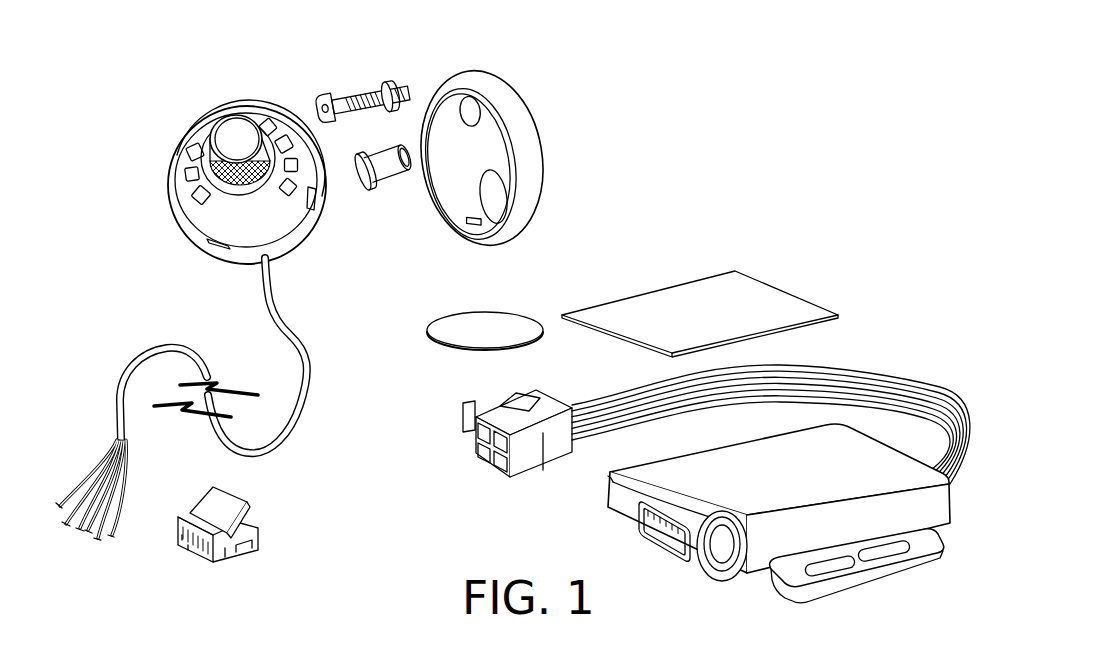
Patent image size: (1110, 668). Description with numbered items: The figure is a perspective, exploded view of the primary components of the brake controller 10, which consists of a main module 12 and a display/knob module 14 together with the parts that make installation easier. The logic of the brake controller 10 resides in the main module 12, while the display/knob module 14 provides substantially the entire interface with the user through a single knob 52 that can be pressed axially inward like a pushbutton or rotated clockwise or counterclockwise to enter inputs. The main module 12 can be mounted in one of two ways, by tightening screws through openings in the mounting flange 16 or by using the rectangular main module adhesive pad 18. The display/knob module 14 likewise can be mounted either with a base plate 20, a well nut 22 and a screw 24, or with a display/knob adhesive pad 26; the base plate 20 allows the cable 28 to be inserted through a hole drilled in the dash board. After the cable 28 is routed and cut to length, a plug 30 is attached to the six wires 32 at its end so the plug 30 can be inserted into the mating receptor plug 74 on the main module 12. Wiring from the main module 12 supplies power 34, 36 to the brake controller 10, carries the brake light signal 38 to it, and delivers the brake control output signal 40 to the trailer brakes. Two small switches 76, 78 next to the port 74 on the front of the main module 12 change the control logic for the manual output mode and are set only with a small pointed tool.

The brake controller 10 is at (700, 162).
The main module 12 is at (746, 472).
The display/knob module 14 is at (248, 90).
The mounting flange 16 is at (888, 570).
The main module adhesive pad 18 is at (665, 305).
The base plate 20 is at (519, 142).
The well nut 22 is at (380, 172).
The screw 24 is at (360, 95).
The display/knob adhesive pad 26 is at (482, 328).
The cable 28 is at (262, 290).
The plug 30 is at (215, 508).
The wires 32 is at (112, 508).
The power 34 is at (636, 425).
The power 36 is at (809, 398).
The brake light signal 38 is at (888, 382).
The brake control output signal 40 is at (920, 398).
The knob 52 is at (237, 135).
The receptor plug 74 is at (660, 530).
The switch 76 is at (711, 536).
The switch 78 is at (723, 551).